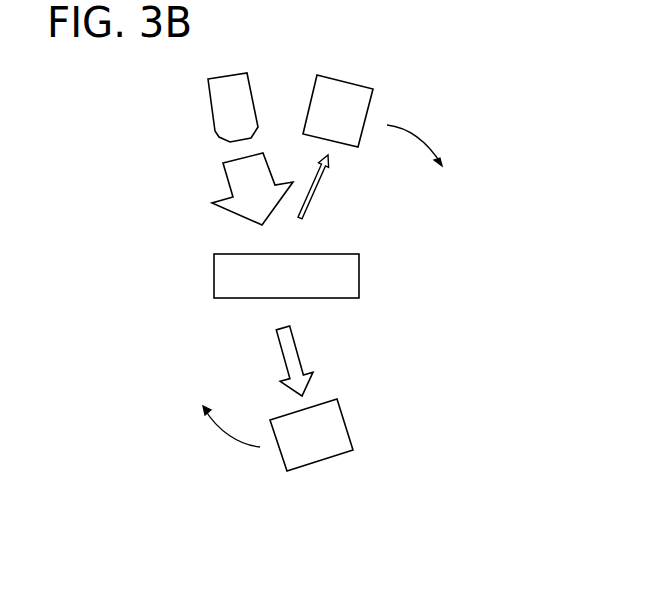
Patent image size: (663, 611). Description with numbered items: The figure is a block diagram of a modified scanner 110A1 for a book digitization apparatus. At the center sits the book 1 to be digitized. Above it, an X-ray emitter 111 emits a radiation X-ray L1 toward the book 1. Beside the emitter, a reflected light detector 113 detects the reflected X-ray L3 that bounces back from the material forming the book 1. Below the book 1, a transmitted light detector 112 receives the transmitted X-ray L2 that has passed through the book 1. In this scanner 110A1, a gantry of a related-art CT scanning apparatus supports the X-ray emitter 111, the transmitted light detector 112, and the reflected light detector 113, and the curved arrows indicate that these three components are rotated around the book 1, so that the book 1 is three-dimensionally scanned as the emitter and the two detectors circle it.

The book 1 is at (302, 254).
The X-ray emitter 111 is at (248, 82).
The transmitted light detector 112 is at (338, 408).
The reflected light detector 113 is at (332, 82).
The radiation X-ray L1 is at (251, 217).
The transmitted X-ray L2 is at (305, 363).
The reflected X-ray L3 is at (318, 183).
The scanner 110A1 is at (445, 77).